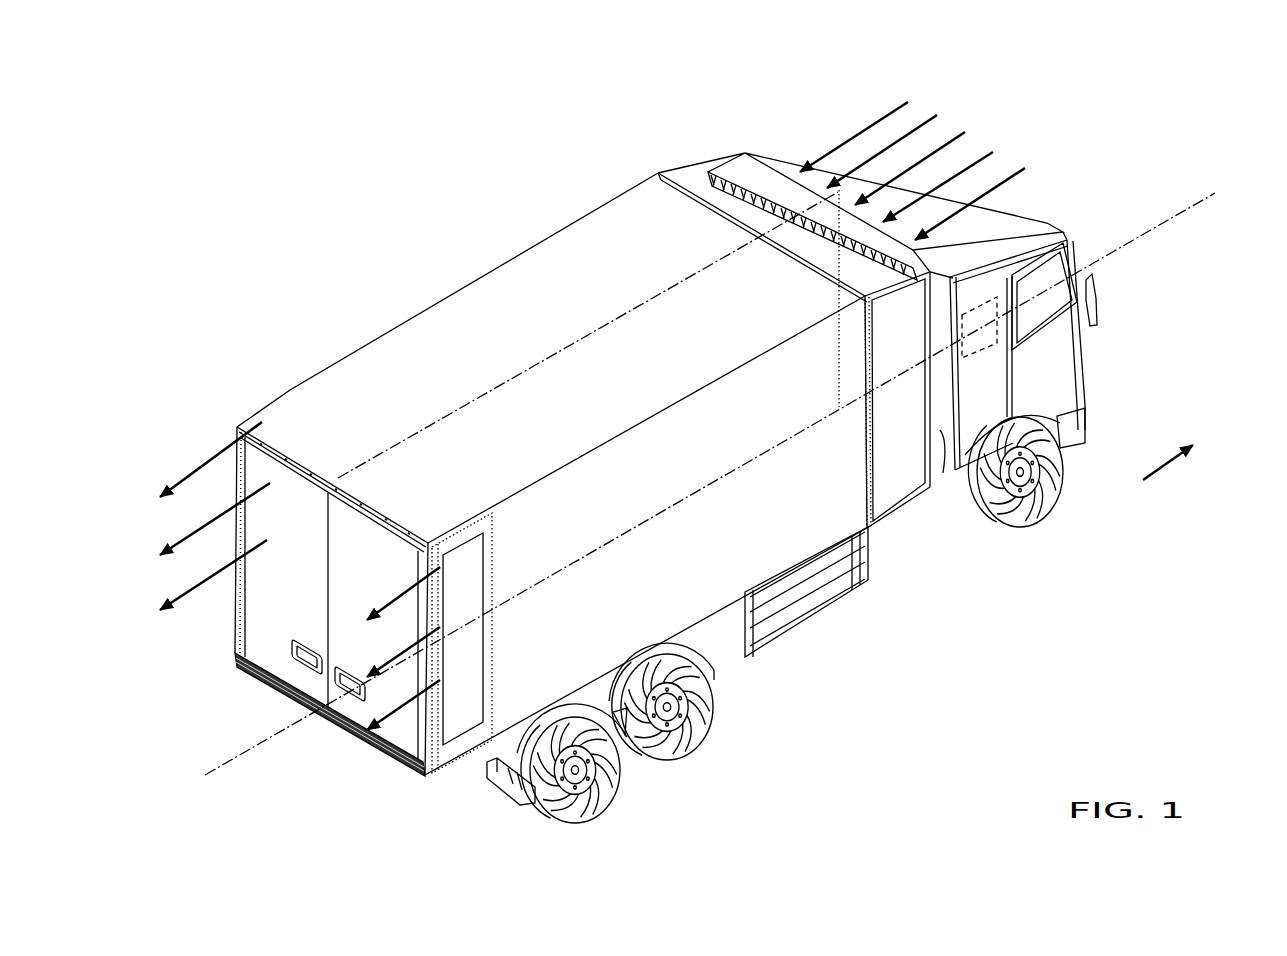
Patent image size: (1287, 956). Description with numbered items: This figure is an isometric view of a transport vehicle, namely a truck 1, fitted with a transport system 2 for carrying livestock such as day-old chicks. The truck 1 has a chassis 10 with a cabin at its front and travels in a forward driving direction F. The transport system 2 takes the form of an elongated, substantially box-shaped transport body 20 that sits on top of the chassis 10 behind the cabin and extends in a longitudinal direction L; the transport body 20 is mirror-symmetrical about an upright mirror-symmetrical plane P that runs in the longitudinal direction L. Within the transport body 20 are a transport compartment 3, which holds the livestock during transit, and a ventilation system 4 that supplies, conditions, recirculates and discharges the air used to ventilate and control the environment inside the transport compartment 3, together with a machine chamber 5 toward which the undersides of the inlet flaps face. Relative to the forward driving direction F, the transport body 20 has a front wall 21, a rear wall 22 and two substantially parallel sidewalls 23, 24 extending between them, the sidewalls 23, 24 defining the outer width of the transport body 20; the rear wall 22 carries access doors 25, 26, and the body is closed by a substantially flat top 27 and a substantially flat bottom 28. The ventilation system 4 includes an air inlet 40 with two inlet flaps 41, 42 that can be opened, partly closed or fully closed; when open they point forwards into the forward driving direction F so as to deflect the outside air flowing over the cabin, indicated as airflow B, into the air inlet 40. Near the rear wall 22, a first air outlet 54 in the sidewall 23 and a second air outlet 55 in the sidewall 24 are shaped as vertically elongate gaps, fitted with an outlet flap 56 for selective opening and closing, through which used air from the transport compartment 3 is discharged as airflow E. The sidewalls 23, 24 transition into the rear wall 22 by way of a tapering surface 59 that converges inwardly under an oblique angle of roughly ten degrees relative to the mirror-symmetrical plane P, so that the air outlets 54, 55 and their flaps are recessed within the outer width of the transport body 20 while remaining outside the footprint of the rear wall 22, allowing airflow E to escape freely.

The truck 1 is at (694, 453).
The transport system 2 is at (581, 458).
The transport compartment 3 is at (803, 550).
The ventilation system 4 is at (862, 180).
The machine chamber 5 is at (792, 532).
The chassis 10 is at (693, 725).
The transport body 20 is at (552, 342).
The front wall 21 is at (943, 497).
The rear wall 22 is at (304, 553).
The sidewall 23 is at (648, 536).
The sidewall 24 is at (525, 280).
The access door 25 is at (315, 492).
The access door 26 is at (397, 540).
The top 27 is at (605, 232).
The bottom 28 is at (590, 660).
The air inlet 40 is at (912, 252).
The inlet flap 41 is at (887, 247).
The inlet flap 42 is at (747, 173).
The first air outlet 54 is at (497, 616).
The second air outlet 55 is at (236, 550).
The outlet flap 56 is at (492, 567).
The tapering surface 59 is at (265, 400).
The airflow B is at (932, 122).
The airflow E is at (200, 468).
The forward driving direction F is at (1168, 473).
The longitudinal direction L is at (719, 474).
The mirror-symmetrical plane P is at (528, 372).